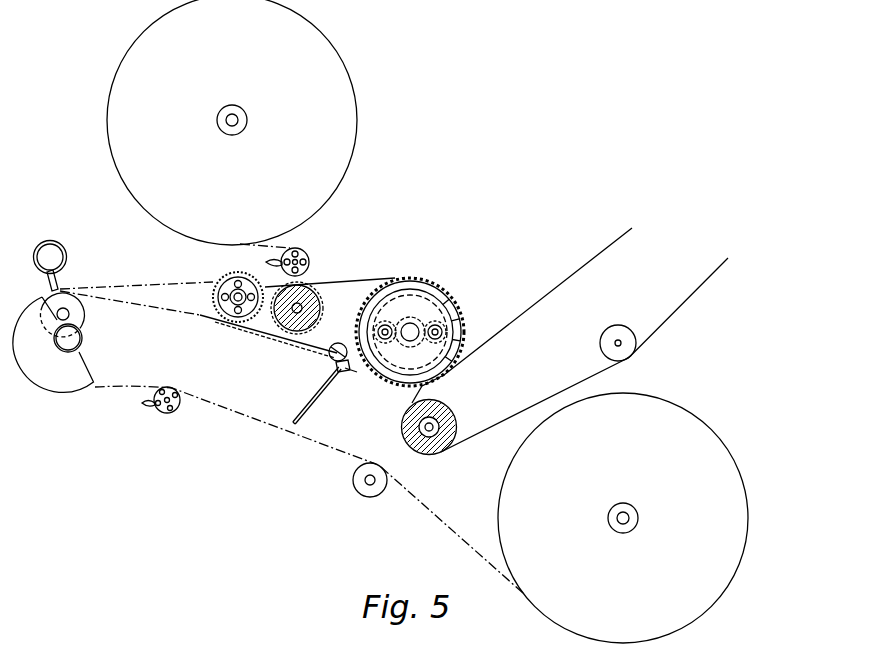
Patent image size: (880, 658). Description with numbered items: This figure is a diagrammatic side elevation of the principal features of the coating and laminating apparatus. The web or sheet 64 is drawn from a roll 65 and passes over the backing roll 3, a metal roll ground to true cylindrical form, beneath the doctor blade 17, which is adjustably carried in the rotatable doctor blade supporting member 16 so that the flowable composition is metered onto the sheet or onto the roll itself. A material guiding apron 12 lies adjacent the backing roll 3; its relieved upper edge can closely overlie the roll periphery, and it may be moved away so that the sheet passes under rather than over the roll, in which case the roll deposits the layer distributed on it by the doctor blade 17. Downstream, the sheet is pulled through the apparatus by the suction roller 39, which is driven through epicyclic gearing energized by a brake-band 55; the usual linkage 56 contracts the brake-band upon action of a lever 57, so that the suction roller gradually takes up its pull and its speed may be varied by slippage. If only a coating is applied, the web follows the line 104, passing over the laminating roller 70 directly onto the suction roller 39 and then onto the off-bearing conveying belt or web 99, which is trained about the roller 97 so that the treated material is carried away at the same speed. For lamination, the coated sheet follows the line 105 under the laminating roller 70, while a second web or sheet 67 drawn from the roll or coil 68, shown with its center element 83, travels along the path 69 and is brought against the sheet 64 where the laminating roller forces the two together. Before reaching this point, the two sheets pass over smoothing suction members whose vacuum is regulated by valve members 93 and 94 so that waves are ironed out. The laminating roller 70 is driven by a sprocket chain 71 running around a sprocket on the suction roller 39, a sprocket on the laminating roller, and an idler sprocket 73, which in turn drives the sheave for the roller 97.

The backing roll 3 is at (84, 315).
The material guiding apron 12 is at (62, 380).
The rotatable doctor blade supporting member 16 is at (56, 246).
The doctor blade 17 is at (59, 281).
The suction roller 39 is at (432, 290).
The brake-band 55 is at (353, 351).
The linkage 56 is at (333, 360).
The lever 57 is at (312, 408).
The web or sheet 64 is at (428, 508).
The roll 65 is at (720, 450).
The web or sheet 67 is at (272, 243).
The roll or coil 68 is at (338, 95).
The path 69 is at (301, 283).
The laminating roller 70 is at (314, 298).
The sprocket chain 71 is at (282, 340).
The idler sprocket 73 is at (226, 286).
The shaft 83 is at (232, 106).
The valve member 93 is at (163, 415).
The valve member 94 is at (304, 251).
The roller 97 is at (452, 417).
The conveying belt or web 99 is at (538, 402).
The line 104 is at (142, 288).
The line 105 is at (173, 313).